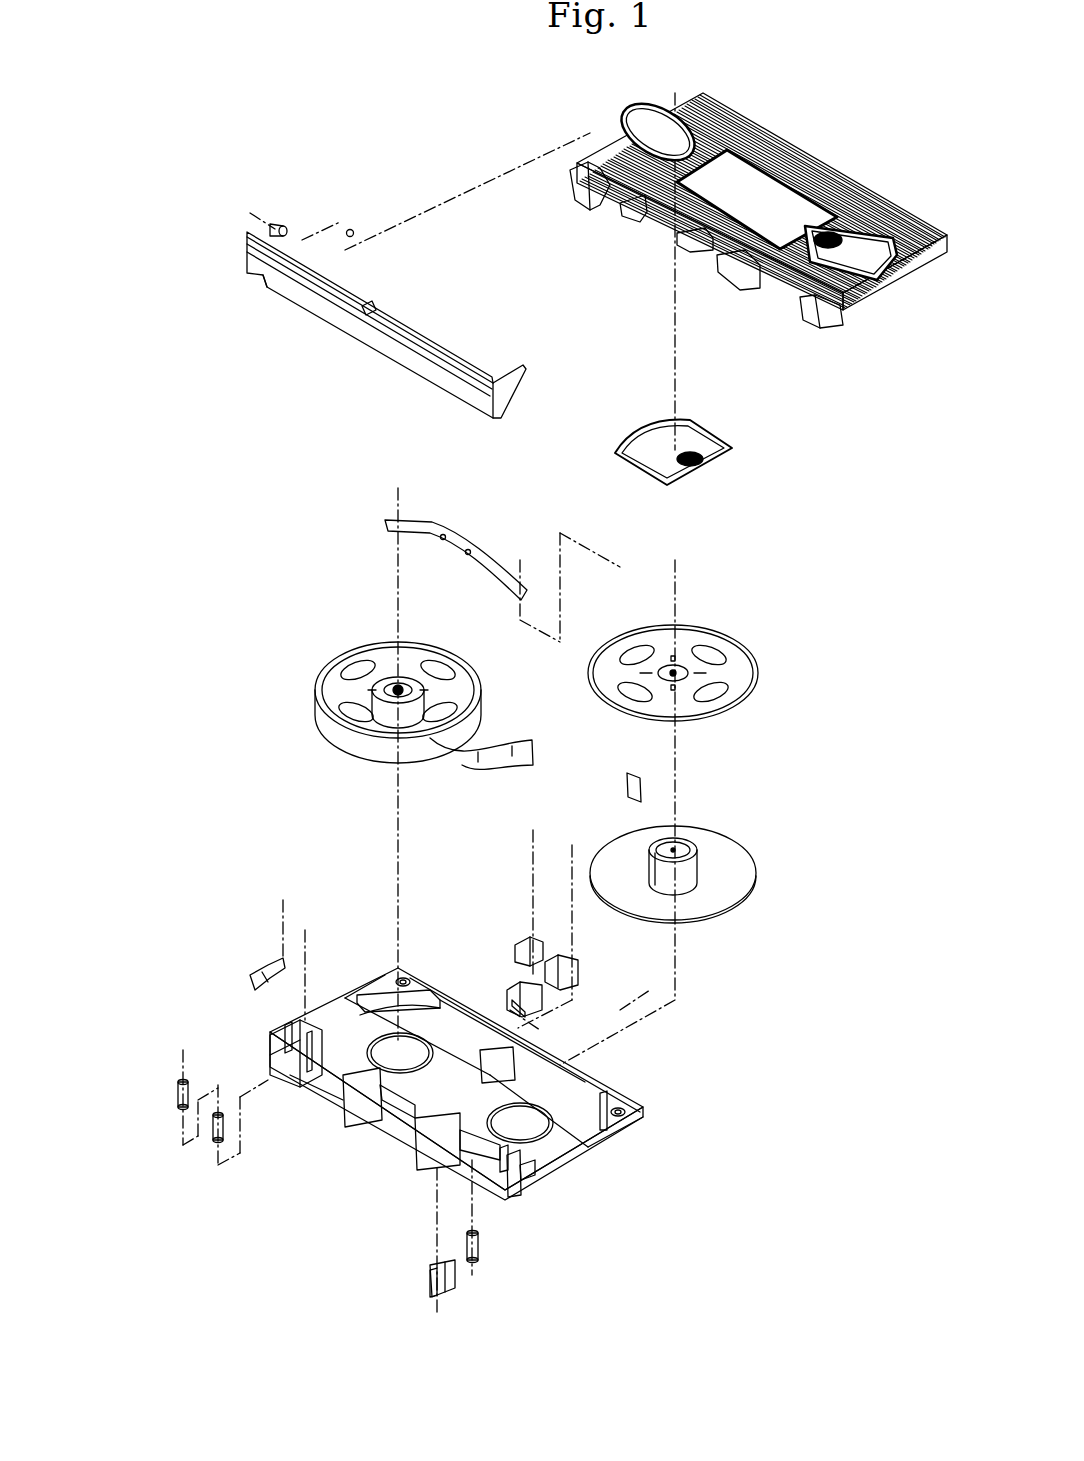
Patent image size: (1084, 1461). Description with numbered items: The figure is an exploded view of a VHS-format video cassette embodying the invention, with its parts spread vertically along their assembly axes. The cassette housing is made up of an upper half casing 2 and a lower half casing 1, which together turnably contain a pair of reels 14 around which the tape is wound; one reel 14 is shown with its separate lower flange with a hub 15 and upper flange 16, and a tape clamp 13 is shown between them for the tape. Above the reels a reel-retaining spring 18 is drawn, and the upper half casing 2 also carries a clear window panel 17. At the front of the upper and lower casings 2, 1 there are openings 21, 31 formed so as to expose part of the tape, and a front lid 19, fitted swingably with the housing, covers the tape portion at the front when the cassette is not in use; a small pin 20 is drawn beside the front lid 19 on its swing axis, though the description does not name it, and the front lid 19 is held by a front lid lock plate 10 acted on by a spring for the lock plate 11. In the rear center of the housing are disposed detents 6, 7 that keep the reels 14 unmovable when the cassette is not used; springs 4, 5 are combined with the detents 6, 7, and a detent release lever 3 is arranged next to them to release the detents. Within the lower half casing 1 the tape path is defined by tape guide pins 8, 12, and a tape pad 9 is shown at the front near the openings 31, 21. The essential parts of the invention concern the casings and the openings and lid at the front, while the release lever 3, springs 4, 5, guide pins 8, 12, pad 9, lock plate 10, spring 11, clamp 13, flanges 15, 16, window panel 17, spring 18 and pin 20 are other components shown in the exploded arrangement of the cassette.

The lower half casing 1 is at (560, 1100).
The upper half casing 2 is at (880, 285).
The detent release lever 3 is at (548, 1008).
The spring 4 is at (576, 920).
The spring 5 is at (528, 892).
The detent 6 is at (578, 952).
The detent 7 is at (499, 918).
The tape guide pin 8 is at (478, 1252).
The tape pad 9 is at (455, 1278).
The front lid lock plate 10 is at (221, 939).
The spring for the lock plate 11 is at (224, 874).
The tape guide pin 12 is at (183, 1095).
The tape clamp 13 is at (632, 787).
The reel 14 is at (325, 667).
The lower flange with a hub 15 is at (717, 860).
The upper flange 16 is at (712, 671).
The clear window panel 17 is at (727, 452).
The reel-retaining spring 18 is at (421, 531).
The front lid 19 is at (420, 356).
The lid pivot pin 20 is at (342, 212).
The opening 21 is at (610, 208).
The opening 31 is at (313, 1090).